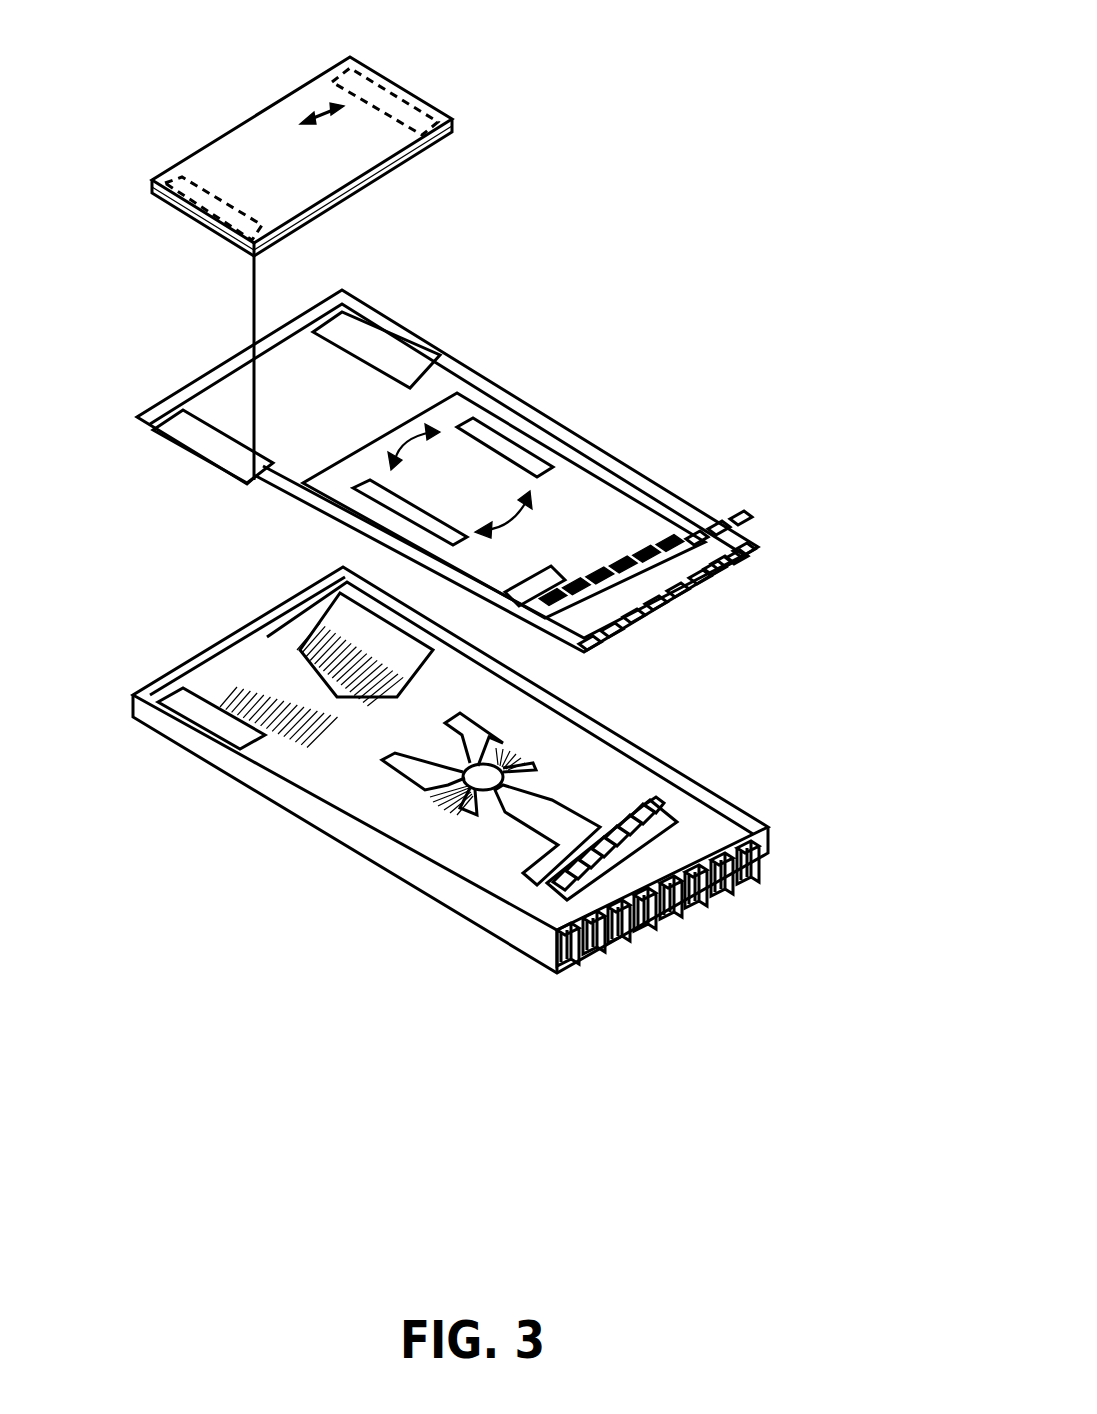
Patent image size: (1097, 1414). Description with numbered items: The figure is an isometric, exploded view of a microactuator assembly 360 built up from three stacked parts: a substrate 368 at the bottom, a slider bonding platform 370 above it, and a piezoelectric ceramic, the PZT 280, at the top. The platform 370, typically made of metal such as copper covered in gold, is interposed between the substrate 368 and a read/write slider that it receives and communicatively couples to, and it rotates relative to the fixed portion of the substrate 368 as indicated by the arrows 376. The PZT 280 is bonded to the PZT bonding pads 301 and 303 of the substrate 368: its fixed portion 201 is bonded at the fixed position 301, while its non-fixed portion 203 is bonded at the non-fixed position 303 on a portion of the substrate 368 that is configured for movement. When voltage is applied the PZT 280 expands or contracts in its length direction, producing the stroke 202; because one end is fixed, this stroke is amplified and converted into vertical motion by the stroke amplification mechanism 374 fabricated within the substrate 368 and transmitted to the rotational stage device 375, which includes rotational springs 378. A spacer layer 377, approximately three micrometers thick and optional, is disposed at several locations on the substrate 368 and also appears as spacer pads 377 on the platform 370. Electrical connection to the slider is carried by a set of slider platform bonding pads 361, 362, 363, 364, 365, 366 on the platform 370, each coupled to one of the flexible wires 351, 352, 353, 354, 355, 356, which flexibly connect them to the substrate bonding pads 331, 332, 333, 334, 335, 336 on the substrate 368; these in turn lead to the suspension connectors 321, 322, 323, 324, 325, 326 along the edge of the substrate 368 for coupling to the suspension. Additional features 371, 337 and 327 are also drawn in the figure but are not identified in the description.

The microactuator assembly 360 is at (716, 23).
The piezoelectric ceramic (PZT) 280 is at (260, 130).
The fixed portion 201 is at (182, 188).
The stroke 202 is at (320, 110).
The non-fixed portion 203 is at (410, 118).
The slider bonding platform 370 is at (497, 430).
The PZT bonding pad (fixed position) 301 is at (205, 440).
The PZT bonding pad (non-fixed position) 303 is at (392, 355).
The lower slot 371 is at (453, 538).
The arrows 376 is at (513, 517).
The slider platform bonding pad 361 is at (670, 538).
The slider platform bonding pad 362 is at (647, 548).
The slider platform bonding pad 363 is at (623, 560).
The slider platform bonding pad 364 is at (600, 570).
The slider platform bonding pad 365 is at (576, 580).
The slider platform bonding pad 366 is at (553, 590).
The substrate bonding pad 331 is at (722, 568).
The substrate bonding pad 332 is at (745, 575).
The substrate bonding pad 333 is at (744, 557).
The substrate bonding pad 334 is at (633, 623).
The substrate bonding pad 335 is at (610, 637).
The substrate bonding pad 336 is at (588, 650).
The via pad 337 is at (656, 610).
The flexible wire 351 is at (742, 524).
The flexible wire 352 is at (697, 538).
The flexible wire 353 is at (722, 530).
The flexible wire 354 is at (722, 570).
The flexible wire 355 is at (700, 584).
The flexible wire 356 is at (678, 597).
The substrate 368 is at (500, 932).
The stroke amplification mechanism 374 is at (237, 688).
The rotational stage device 375 is at (477, 815).
The rotational springs 378 is at (467, 785).
The spacer layer 377 is at (553, 812).
The suspension connector 321 is at (733, 877).
The suspension connector 322 is at (712, 883).
The suspension connector 323 is at (687, 902).
The suspension connector 324 is at (643, 923).
The suspension connector 325 is at (620, 933).
The suspension connector 326 is at (597, 947).
The edge connector contact 327 is at (663, 912).